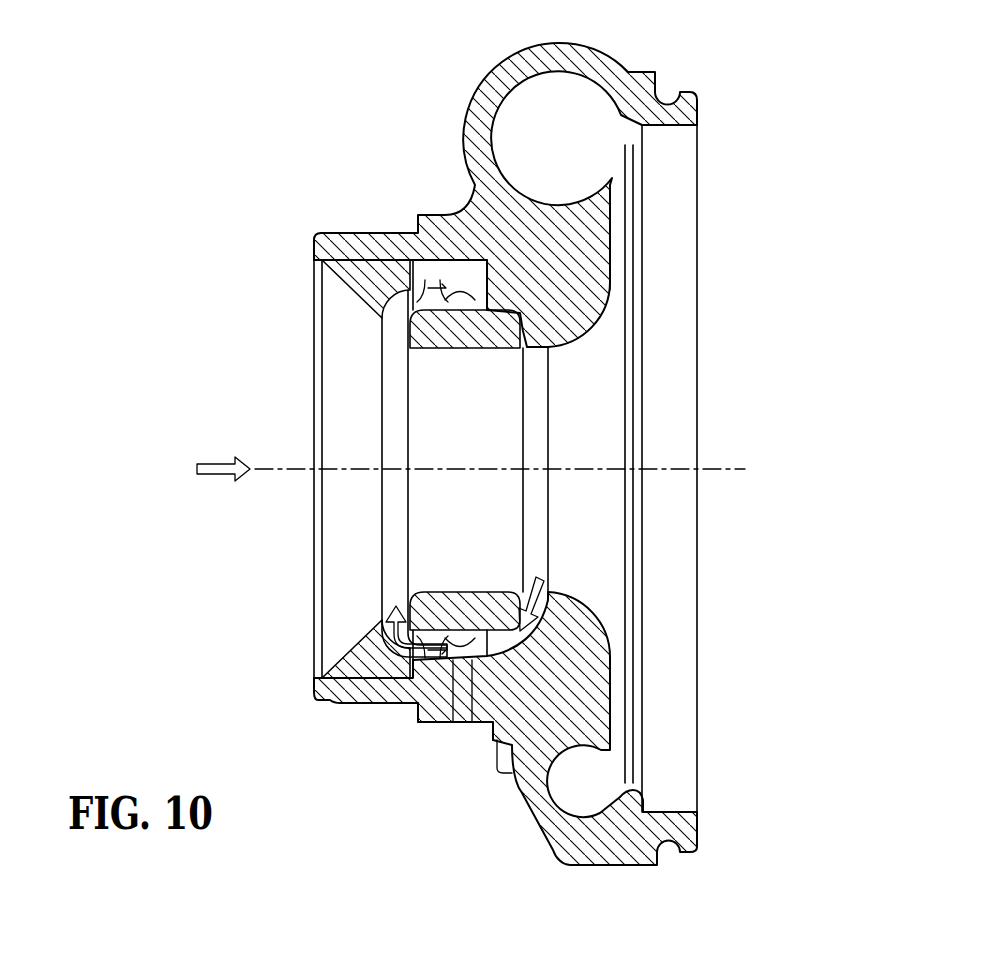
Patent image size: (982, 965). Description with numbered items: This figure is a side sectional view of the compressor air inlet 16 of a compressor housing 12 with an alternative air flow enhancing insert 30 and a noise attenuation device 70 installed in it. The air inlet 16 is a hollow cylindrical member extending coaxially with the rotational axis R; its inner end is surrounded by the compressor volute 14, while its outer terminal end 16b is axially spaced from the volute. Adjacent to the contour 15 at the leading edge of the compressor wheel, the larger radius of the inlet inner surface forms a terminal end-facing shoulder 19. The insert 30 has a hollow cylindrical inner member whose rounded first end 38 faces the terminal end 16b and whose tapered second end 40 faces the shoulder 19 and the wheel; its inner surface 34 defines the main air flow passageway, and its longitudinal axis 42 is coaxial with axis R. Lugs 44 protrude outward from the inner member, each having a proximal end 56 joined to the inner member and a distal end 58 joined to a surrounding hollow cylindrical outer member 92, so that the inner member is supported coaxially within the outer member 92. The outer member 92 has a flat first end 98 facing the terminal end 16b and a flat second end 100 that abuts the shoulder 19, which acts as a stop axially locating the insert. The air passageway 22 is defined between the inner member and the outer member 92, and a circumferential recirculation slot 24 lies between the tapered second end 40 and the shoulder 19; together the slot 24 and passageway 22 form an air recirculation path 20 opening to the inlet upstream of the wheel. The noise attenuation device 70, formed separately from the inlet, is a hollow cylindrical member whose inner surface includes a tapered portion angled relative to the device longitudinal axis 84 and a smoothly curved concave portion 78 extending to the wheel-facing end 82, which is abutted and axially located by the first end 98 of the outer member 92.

The hub 12 is at (632, 80).
The compressor volute 14 is at (573, 137).
The air inlet 16 is at (447, 213).
The terminal end 16b is at (318, 246).
The concave portion 78 is at (392, 272).
The first end 98 is at (405, 673).
The first end 38 is at (407, 450).
The inner surface 34 is at (477, 592).
The air flow enhancing insert 30 is at (517, 420).
The second end 40 is at (527, 437).
The contour 15 is at (523, 318).
The air recirculation path 20 is at (752, 268).
The air passageway 22 is at (480, 293).
The recirculation slot 24 is at (528, 318).
The distal end 58 is at (490, 660).
The second end 100 is at (490, 673).
The lugs 44 is at (428, 283).
The proximal end 56 is at (436, 612).
The longitudinal axis 42 is at (370, 544).
The device longitudinal axis 84 is at (722, 484).
The noise attenuation device 70 is at (322, 565).
The wheel-facing end 82 is at (427, 693).
The outer member 92 is at (440, 688).
The shoulder 19 is at (462, 660).